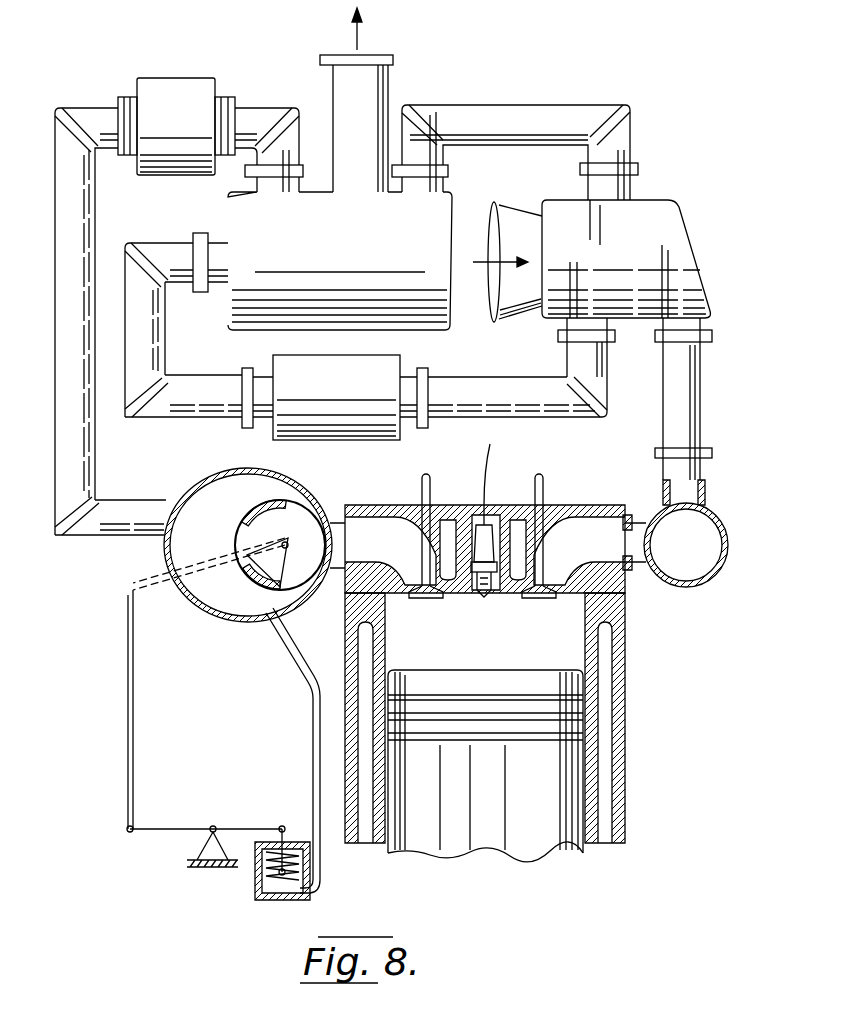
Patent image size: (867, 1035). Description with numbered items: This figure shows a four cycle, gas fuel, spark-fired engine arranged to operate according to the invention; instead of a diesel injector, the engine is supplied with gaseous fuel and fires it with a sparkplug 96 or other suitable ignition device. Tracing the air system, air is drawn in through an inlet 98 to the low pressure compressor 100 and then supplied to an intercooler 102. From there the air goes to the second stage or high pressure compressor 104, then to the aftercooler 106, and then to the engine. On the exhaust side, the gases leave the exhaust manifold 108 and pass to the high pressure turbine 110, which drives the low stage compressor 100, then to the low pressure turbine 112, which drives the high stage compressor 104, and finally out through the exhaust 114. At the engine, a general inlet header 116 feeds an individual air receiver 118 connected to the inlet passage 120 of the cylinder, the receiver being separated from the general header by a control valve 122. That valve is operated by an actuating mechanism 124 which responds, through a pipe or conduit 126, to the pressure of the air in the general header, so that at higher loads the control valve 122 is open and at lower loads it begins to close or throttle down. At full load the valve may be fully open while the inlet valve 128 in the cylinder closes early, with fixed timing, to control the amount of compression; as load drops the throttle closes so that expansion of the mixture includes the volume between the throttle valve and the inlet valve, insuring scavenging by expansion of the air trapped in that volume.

The sparkplug 96 is at (490, 505).
The inlet 98 is at (486, 276).
The low pressure compressor 100 is at (580, 290).
The intercooler 102 is at (385, 436).
The high pressure compressor 104 is at (248, 320).
The aftercooler 106 is at (183, 88).
The exhaust manifold 108 is at (706, 584).
The high pressure turbine 110 is at (682, 272).
The low pressure turbine 112 is at (442, 230).
The exhaust 114 is at (382, 55).
The general inlet header 116 is at (259, 468).
The individual air receiver 118 is at (300, 515).
The inlet passage 120 is at (370, 545).
The control valve 122 is at (252, 546).
The actuating mechanism 124 is at (246, 887).
The pipe or conduit 126 is at (296, 661).
The inlet valve 128 is at (434, 600).